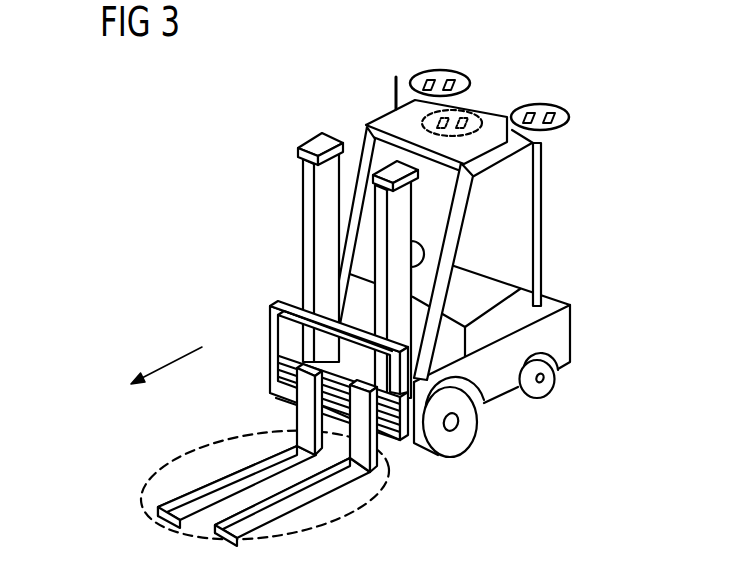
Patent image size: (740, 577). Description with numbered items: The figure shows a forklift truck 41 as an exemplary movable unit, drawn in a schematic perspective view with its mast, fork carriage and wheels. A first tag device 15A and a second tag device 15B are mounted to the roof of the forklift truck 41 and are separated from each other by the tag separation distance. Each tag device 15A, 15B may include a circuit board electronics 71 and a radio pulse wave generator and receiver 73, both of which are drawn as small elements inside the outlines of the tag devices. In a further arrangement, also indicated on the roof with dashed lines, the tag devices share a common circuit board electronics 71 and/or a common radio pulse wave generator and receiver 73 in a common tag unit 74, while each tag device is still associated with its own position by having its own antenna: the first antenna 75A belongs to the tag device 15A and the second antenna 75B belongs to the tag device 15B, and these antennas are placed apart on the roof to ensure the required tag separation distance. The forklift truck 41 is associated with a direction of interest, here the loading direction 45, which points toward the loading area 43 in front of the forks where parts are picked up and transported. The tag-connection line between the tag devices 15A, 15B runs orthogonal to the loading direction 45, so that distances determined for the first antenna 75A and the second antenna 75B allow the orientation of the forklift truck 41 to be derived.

The first tag device 15A is at (468, 76).
The second tag device 15B is at (570, 118).
The forklift truck 41 is at (573, 345).
The loading area 43 is at (163, 458).
The loading direction 45 is at (182, 357).
The circuit board electronics 71 is at (430, 78).
The radio pulse wave generator and receiver 73 is at (450, 78).
The common tag unit 74 is at (445, 135).
The first antenna 75A is at (394, 78).
The second antenna 75B is at (540, 160).